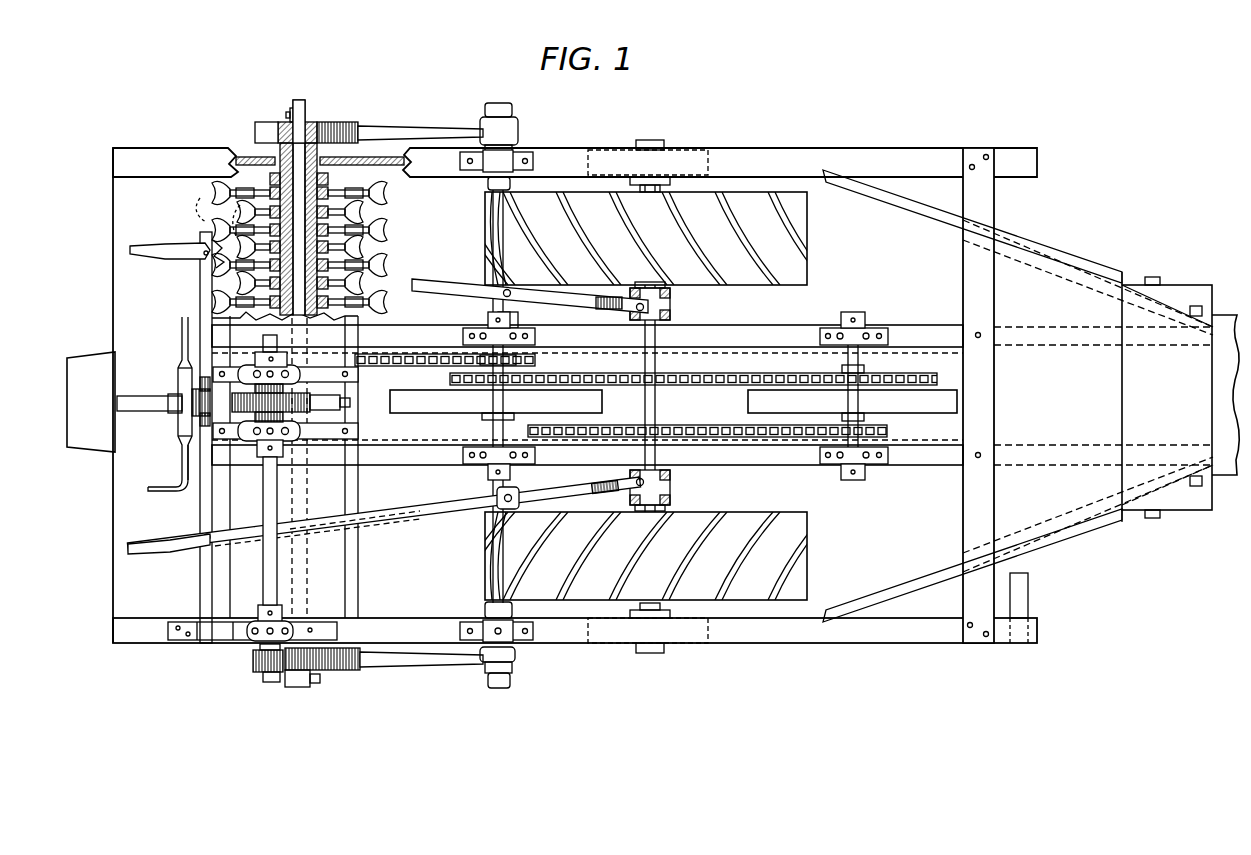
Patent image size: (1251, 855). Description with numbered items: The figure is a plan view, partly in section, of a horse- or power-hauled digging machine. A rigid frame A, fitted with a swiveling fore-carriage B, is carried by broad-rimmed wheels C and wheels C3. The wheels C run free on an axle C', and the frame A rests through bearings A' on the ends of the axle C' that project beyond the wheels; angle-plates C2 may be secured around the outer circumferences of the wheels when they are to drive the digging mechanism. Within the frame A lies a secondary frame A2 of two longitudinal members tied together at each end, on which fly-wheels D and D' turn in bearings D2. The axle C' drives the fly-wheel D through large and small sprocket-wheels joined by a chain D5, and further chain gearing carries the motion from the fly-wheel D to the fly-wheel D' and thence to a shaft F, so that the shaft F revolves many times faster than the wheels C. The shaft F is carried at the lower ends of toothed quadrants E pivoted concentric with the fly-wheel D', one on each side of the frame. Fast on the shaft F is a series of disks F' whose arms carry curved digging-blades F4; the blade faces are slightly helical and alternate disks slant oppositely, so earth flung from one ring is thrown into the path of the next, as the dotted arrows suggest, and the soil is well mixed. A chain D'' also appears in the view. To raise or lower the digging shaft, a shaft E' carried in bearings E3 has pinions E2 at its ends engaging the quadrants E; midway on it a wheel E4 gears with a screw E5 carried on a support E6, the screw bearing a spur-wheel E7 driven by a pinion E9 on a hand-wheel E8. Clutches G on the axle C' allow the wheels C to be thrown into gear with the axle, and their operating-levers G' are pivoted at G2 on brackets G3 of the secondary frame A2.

The rigid frame A is at (663, 396).
The bearings A' is at (750, 145).
The secondary frame A2 is at (920, 497).
The swiveling fore-carriage B is at (1145, 418).
The broad-rimmed wheels C is at (644, 396).
The axle or shaft C' is at (648, 396).
The angle-plates C2 is at (622, 247).
The wheels C3 is at (512, 305).
The fly-wheel D is at (703, 409).
The fly-wheel D' is at (496, 417).
The upper conveyor chain D'' is at (445, 345).
The bearings D2 is at (462, 481).
The chain D5 is at (713, 433).
The toothed quadrants E is at (409, 397).
The shaft E' is at (257, 531).
The pinions E2 is at (265, 680).
The bearings E3 is at (264, 607).
The wheel E4 is at (318, 408).
The screw E5 is at (281, 432).
The support E6 is at (228, 432).
The spur-wheel E7 is at (202, 382).
The hand-wheel E8 is at (182, 422).
The pinion E9 is at (205, 402).
The shaft F is at (243, 207).
The disks F' is at (324, 243).
The digging-blades F4 is at (425, 303).
The clutches G is at (667, 396).
The operating-levers G' is at (147, 405).
The pivot G2 is at (510, 290).
The brackets G3 is at (512, 488).